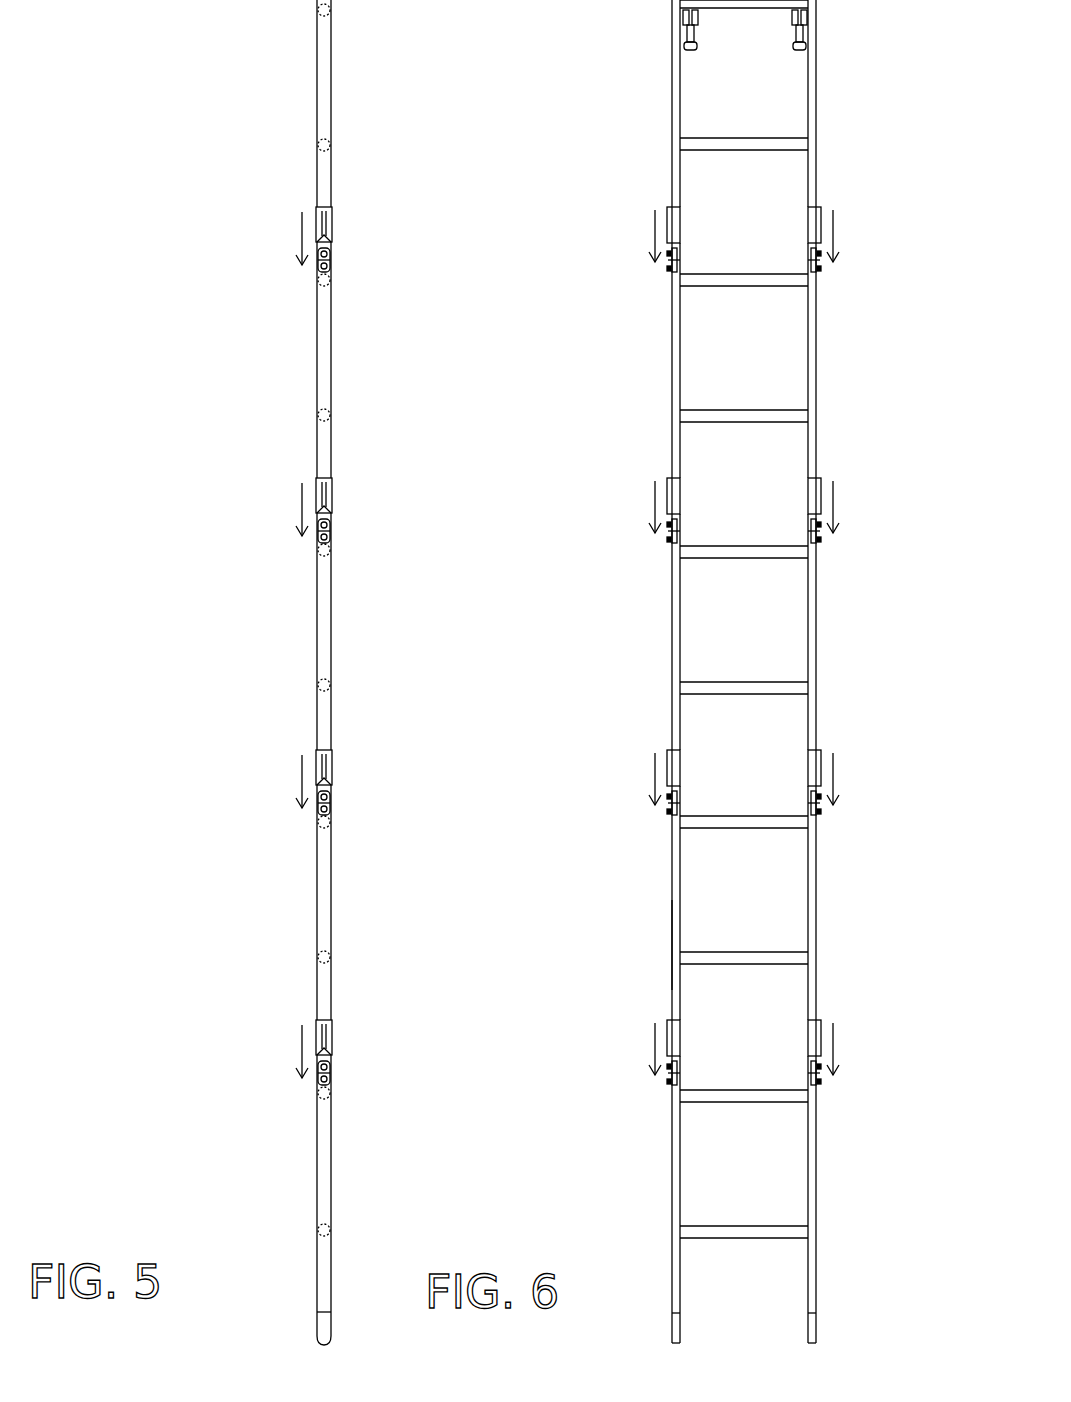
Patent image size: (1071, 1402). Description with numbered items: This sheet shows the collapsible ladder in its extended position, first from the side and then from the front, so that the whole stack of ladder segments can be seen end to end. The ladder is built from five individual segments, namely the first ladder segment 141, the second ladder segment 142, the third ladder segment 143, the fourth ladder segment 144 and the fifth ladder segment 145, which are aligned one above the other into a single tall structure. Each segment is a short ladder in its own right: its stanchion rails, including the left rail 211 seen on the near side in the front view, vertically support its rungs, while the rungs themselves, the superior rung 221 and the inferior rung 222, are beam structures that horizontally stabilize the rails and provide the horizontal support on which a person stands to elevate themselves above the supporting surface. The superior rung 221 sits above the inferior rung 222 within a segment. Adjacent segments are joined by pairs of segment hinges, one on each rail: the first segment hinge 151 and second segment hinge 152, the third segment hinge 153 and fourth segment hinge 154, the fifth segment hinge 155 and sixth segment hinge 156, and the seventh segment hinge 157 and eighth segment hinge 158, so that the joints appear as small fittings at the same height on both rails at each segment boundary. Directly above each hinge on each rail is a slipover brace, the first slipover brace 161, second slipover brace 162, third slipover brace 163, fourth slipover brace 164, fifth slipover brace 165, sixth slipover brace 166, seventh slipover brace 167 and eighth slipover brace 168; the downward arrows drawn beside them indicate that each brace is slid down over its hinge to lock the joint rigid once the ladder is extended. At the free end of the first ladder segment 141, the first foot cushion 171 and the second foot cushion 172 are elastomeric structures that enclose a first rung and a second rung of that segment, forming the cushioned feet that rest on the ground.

In FIG. 5, the first ladder segment 141 is at (331, 1153).
In FIG. 6, the first ladder segment 141 is at (822, 1215).
In FIG. 5, the second ladder segment 142 is at (331, 930).
In FIG. 6, the second ladder segment 142 is at (762, 903).
In FIG. 5, the third ladder segment 143 is at (345, 665).
In FIG. 6, the third ladder segment 143 is at (820, 685).
In FIG. 5, the fourth ladder segment 144 is at (345, 412).
In FIG. 6, the fourth ladder segment 144 is at (820, 412).
In FIG. 5, the fifth ladder segment 145 is at (331, 118).
In FIG. 6, the fifth ladder segment 145 is at (820, 150).
In FIG. 6, the first segment hinge 151 is at (682, 1078).
In FIG. 6, the second segment hinge 152 is at (812, 1082).
In FIG. 6, the third segment hinge 153 is at (665, 813).
In FIG. 6, the fourth segment hinge 154 is at (808, 818).
In FIG. 6, the fifth segment hinge 155 is at (665, 538).
In FIG. 6, the sixth segment hinge 156 is at (812, 540).
In FIG. 6, the seventh segment hinge 157 is at (668, 262).
In FIG. 6, the eighth segment hinge 158 is at (812, 265).
In FIG. 6, the first slipover brace 161 is at (680, 1035).
In FIG. 6, the second slipover brace 162 is at (810, 1033).
In FIG. 6, the third slipover brace 163 is at (680, 765).
In FIG. 6, the fourth slipover brace 164 is at (815, 765).
In FIG. 6, the fifth slipover brace 165 is at (685, 490).
In FIG. 6, the sixth slipover brace 166 is at (810, 497).
In FIG. 6, the seventh slipover brace 167 is at (677, 222).
In FIG. 6, the eighth slipover brace 168 is at (818, 223).
In FIG. 6, the first foot cushion 171 is at (690, 45).
In FIG. 6, the second foot cushion 172 is at (800, 42).
In FIG. 6, the left rail 211 is at (665, 935).
In FIG. 6, the superior rung 221 is at (697, 828).
In FIG. 6, the inferior rung 222 is at (700, 948).